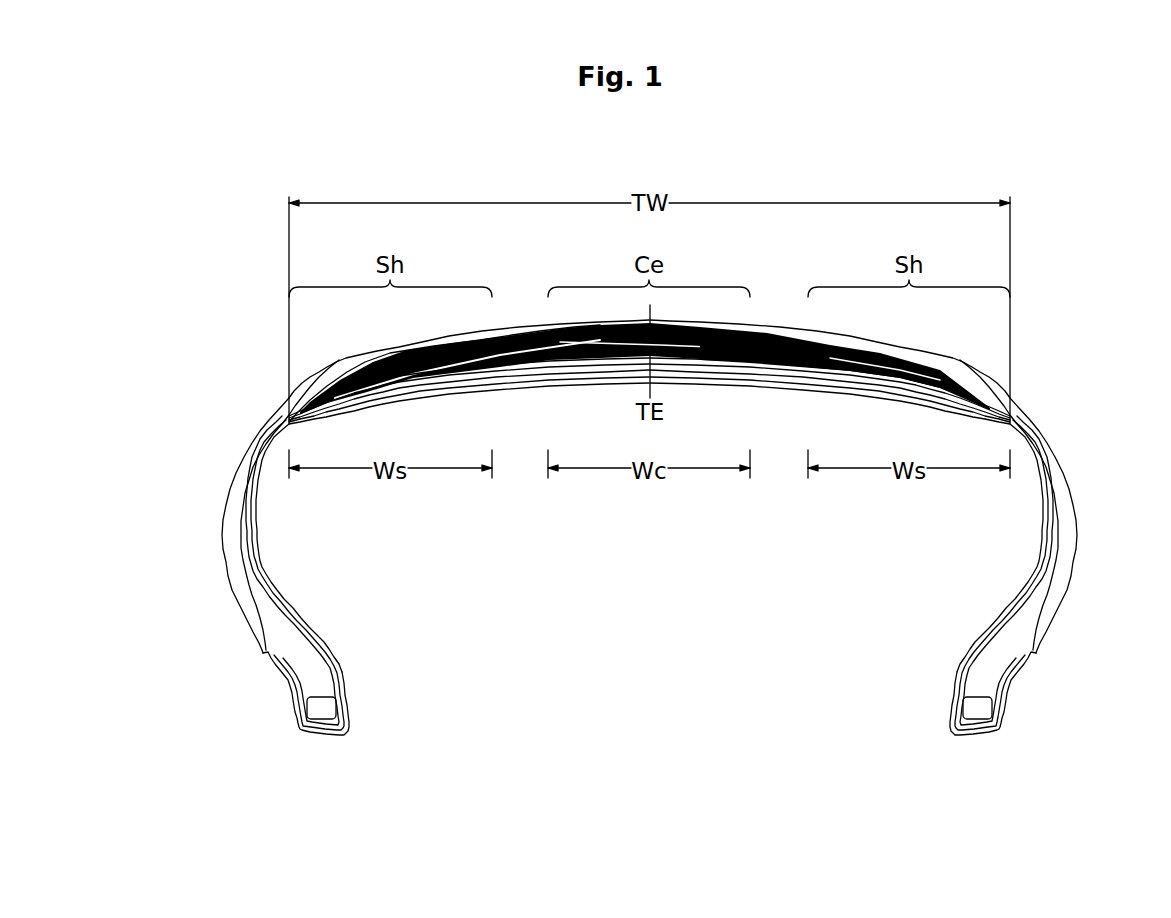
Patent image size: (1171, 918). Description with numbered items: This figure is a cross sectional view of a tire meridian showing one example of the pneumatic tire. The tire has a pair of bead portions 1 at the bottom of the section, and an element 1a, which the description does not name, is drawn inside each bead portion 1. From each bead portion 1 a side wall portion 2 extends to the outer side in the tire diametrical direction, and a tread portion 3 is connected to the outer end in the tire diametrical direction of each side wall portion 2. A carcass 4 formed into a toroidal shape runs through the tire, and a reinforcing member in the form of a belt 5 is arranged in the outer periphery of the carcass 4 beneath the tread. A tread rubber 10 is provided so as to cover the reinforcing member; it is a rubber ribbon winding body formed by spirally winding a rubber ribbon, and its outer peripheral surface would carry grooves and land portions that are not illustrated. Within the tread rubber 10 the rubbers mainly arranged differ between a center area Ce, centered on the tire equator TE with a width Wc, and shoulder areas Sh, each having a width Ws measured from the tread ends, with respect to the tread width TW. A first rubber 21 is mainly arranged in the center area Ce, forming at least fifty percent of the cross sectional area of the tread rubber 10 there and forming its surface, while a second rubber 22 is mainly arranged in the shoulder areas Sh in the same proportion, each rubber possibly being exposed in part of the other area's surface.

The bead portion 1 is at (296, 729).
The bead core 1a is at (335, 710).
The side wall portion 2 is at (1107, 490).
The tread portion 3 is at (517, 296).
The carcass 4 is at (1043, 457).
The belt 5 is at (787, 378).
The tread rubber 10 is at (772, 323).
The rubber 21 is at (680, 320).
The rubber 22 is at (857, 340).